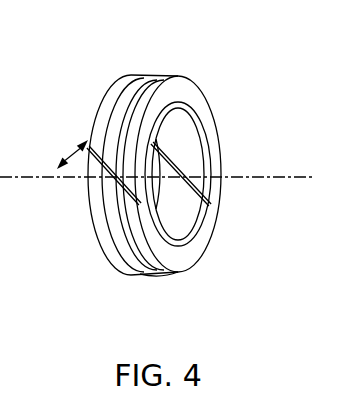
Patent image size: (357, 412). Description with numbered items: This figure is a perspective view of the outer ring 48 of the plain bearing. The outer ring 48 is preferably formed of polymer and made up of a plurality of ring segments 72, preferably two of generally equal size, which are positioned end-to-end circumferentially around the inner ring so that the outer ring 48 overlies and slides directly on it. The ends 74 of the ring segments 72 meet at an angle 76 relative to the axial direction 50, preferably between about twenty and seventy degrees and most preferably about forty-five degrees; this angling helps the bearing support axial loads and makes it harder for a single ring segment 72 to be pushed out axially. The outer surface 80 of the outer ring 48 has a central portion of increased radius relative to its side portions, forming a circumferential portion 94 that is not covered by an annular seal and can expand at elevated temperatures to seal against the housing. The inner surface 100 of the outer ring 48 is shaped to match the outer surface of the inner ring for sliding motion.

The outer ring 48 is at (157, 171).
The axial direction 50 is at (298, 173).
The ring segments 72 is at (142, 75).
The ends 74 is at (115, 178).
The angle 76 is at (67, 149).
The outer surface 80 is at (155, 73).
The circumferential portion 94 is at (143, 273).
The inner surface 100 is at (177, 133).